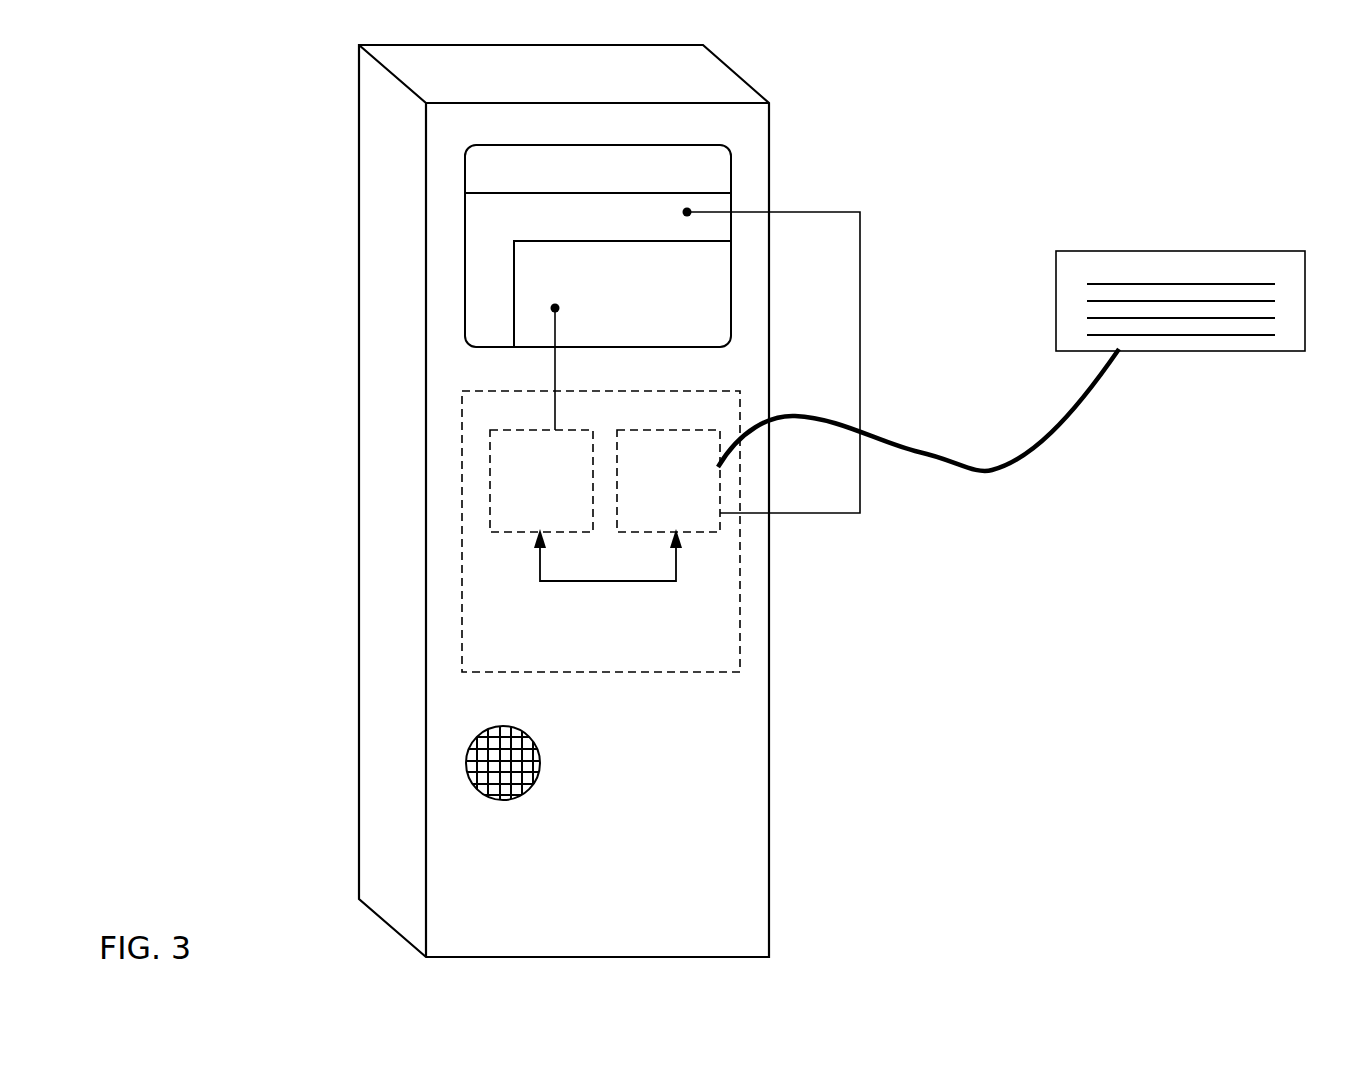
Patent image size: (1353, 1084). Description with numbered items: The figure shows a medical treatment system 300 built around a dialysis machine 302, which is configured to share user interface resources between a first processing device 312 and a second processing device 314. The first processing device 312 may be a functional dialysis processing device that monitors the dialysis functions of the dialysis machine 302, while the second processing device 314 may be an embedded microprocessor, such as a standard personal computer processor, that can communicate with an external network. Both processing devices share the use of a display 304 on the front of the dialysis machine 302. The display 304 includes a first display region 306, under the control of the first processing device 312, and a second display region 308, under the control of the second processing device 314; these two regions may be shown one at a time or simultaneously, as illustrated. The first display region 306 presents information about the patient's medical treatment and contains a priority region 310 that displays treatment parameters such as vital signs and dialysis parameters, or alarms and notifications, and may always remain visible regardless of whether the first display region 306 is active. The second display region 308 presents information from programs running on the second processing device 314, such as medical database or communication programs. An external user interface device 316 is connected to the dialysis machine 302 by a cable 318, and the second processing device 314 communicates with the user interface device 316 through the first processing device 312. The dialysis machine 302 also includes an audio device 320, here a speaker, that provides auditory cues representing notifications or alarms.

The medical treatment system 300 is at (250, 155).
The dialysis machine 302 is at (356, 499).
The display 304 is at (465, 282).
The first display region 306 is at (483, 223).
The second display region 308 is at (690, 315).
The priority region 310 is at (677, 155).
The first processing device 312 is at (698, 533).
The second processing device 314 is at (512, 532).
The user interface device 316 is at (1105, 250).
The cable 318 is at (992, 472).
The audio device 320 is at (542, 758).